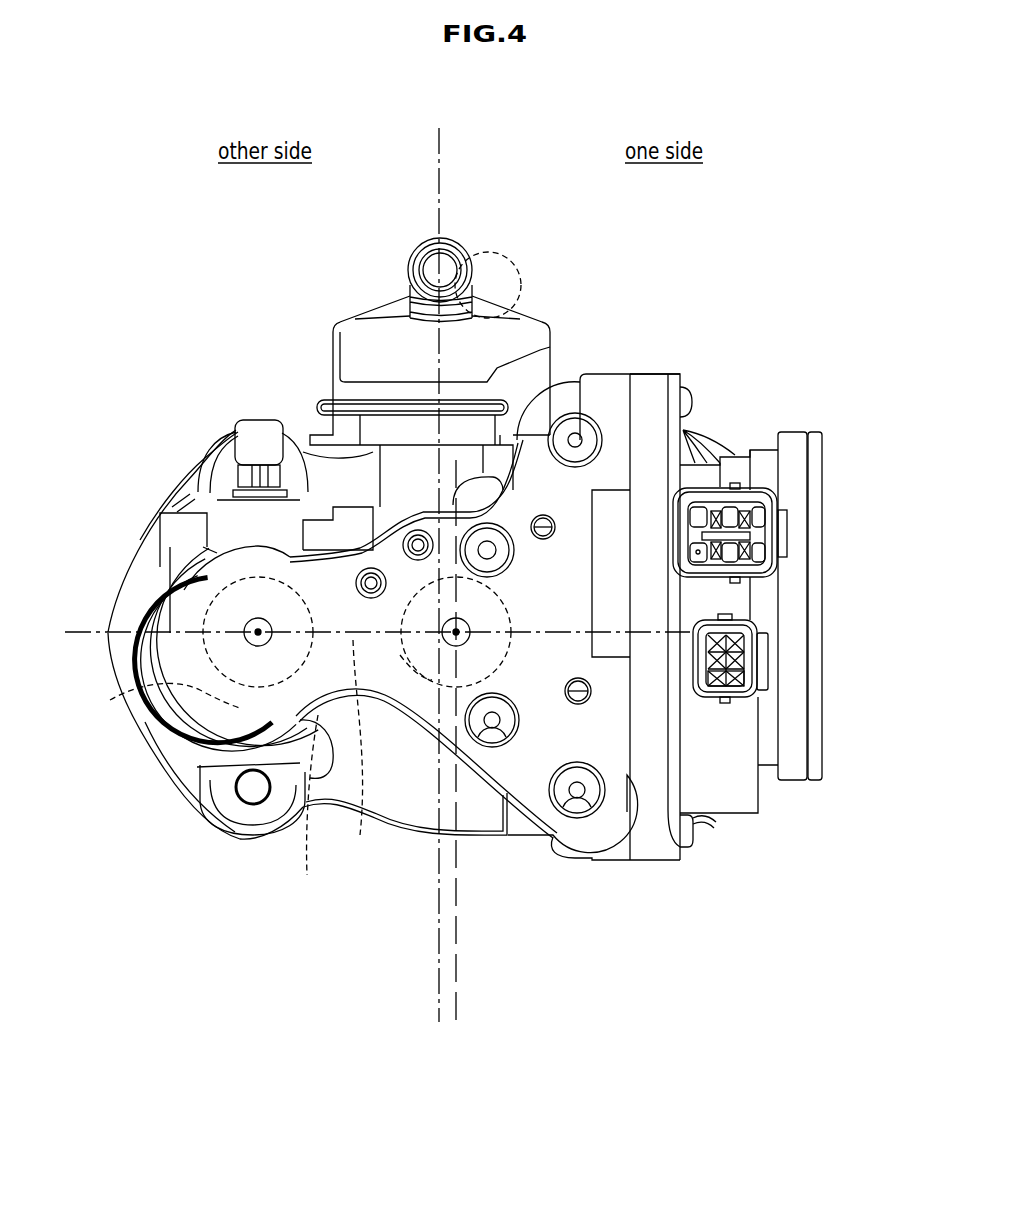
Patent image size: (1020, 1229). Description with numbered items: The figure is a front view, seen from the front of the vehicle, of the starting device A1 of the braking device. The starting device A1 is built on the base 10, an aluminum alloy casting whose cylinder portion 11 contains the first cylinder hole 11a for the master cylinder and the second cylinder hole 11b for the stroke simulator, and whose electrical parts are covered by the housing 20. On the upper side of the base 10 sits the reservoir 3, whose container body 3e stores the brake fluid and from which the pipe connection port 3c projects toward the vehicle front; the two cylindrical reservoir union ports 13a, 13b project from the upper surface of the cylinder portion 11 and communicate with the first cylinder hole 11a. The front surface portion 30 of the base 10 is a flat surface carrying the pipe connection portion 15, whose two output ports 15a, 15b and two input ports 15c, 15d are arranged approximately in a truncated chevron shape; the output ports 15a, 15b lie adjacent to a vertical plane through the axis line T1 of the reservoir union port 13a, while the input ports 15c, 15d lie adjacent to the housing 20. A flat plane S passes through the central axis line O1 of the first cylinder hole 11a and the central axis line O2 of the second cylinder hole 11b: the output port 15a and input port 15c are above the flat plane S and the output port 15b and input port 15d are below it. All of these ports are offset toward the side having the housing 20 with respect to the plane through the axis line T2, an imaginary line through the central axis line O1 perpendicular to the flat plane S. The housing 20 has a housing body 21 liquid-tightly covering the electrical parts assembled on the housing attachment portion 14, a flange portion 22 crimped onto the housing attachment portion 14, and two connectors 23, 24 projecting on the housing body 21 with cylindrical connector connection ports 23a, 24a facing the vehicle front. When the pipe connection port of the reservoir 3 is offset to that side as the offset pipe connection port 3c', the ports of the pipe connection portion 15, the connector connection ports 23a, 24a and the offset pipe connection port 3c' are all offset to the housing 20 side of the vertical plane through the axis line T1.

The reservoir 3 is at (412, 248).
The pipe connection port 3c is at (452, 244).
The offset pipe connection port 3c' is at (528, 276).
The container body 3e is at (378, 307).
The reservoir union port 13a is at (393, 497).
The reservoir union port 13b is at (383, 364).
The housing attachment portion 14 is at (604, 374).
The pipe connection portion 15 is at (550, 662).
The output port 15a is at (498, 545).
The output port 15b is at (468, 742).
The input port 15c is at (586, 438).
The input port 15d is at (596, 830).
The housing 20 is at (818, 458).
The housing body 21 is at (722, 777).
The flange portion 22 is at (655, 827).
The connector 23 is at (762, 617).
The connector connection port 23a is at (745, 675).
The connector 24 is at (765, 487).
The connector connection port 24a is at (770, 548).
The base 10 is at (417, 840).
The cylinder portion 11 is at (222, 710).
The first cylinder hole 11a is at (365, 822).
The second cylinder hole 11b is at (195, 693).
The front surface portion 30 is at (318, 808).
The starting device A1 is at (700, 290).
The flat plane S is at (92, 630).
The axis line T1 is at (436, 987).
The axis line T2 is at (457, 998).
The central axis line O1 is at (468, 628).
The central axis line O2 is at (272, 630).